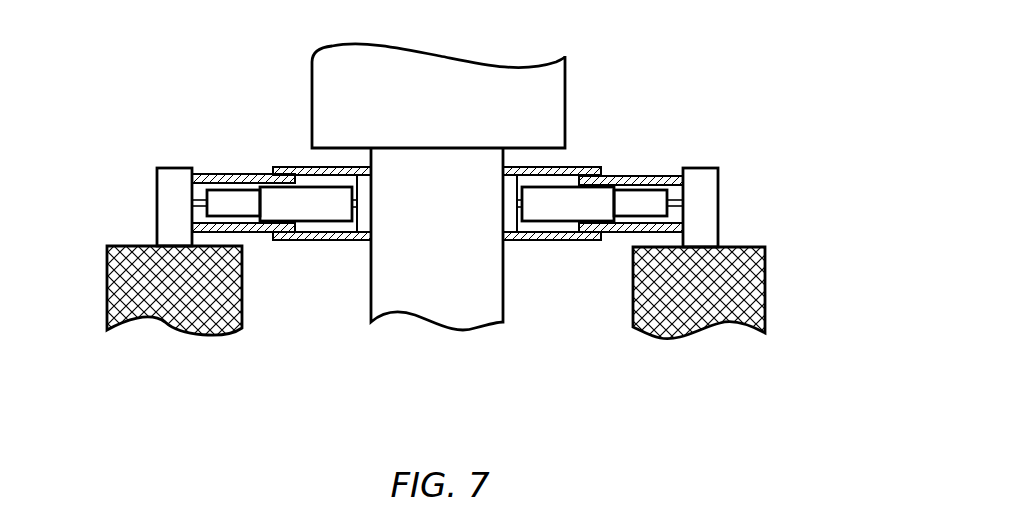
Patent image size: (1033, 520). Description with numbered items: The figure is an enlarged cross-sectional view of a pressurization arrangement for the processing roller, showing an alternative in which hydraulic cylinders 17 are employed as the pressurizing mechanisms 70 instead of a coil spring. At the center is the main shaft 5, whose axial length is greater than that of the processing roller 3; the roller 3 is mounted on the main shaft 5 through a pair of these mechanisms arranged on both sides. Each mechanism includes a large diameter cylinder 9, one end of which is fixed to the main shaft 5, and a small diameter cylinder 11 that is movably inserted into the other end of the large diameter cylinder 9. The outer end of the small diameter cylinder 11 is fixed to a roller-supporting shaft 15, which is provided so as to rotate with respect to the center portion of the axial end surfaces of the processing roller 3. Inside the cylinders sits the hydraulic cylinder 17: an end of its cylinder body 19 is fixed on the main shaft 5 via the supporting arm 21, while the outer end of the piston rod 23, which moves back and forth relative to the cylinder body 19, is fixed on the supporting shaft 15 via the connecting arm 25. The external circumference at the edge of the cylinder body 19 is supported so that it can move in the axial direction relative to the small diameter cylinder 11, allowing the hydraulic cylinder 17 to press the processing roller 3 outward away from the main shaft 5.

The processing roller 3 is at (108, 292).
The main shaft 5 is at (423, 305).
The large diameter cylinder 9 is at (297, 167).
The small diameter cylinder 11 is at (232, 174).
The roller-supporting shaft 15 is at (160, 200).
The hydraulic cylinder 17 is at (437, 313).
The cylinder body 19 is at (313, 205).
The supporting arm 21 is at (357, 233).
The piston rod 23 is at (245, 205).
The connecting arm 25 is at (200, 173).
The pressurizing mechanism 70 is at (437, 133).